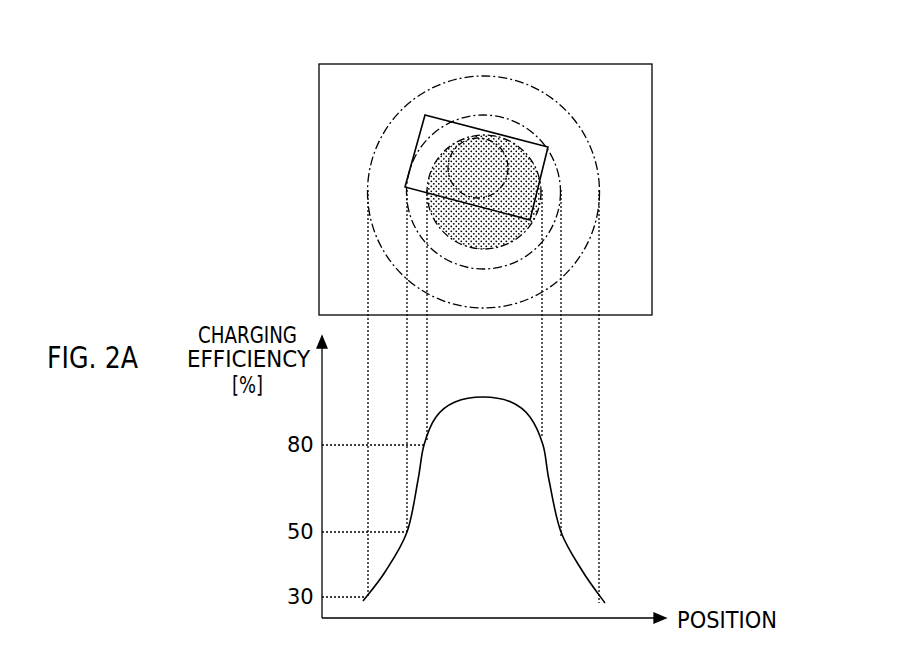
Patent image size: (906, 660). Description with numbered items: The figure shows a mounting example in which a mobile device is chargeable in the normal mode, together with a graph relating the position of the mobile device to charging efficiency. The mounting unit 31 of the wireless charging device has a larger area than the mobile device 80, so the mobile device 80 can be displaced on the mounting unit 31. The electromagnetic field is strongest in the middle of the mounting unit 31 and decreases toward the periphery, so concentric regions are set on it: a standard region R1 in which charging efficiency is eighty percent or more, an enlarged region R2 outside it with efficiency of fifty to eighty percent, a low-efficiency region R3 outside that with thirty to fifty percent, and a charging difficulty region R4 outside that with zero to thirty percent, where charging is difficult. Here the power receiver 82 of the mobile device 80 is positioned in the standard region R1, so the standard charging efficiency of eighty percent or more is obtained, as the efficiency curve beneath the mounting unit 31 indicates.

The mounting unit 31 is at (653, 137).
The mobile device 80 is at (438, 131).
The power receiver 82 is at (467, 137).
The standard region R1 is at (539, 203).
The enlarged region R2 is at (528, 238).
The low-efficiency region R3 is at (547, 262).
The charging difficulty region R4 is at (620, 293).